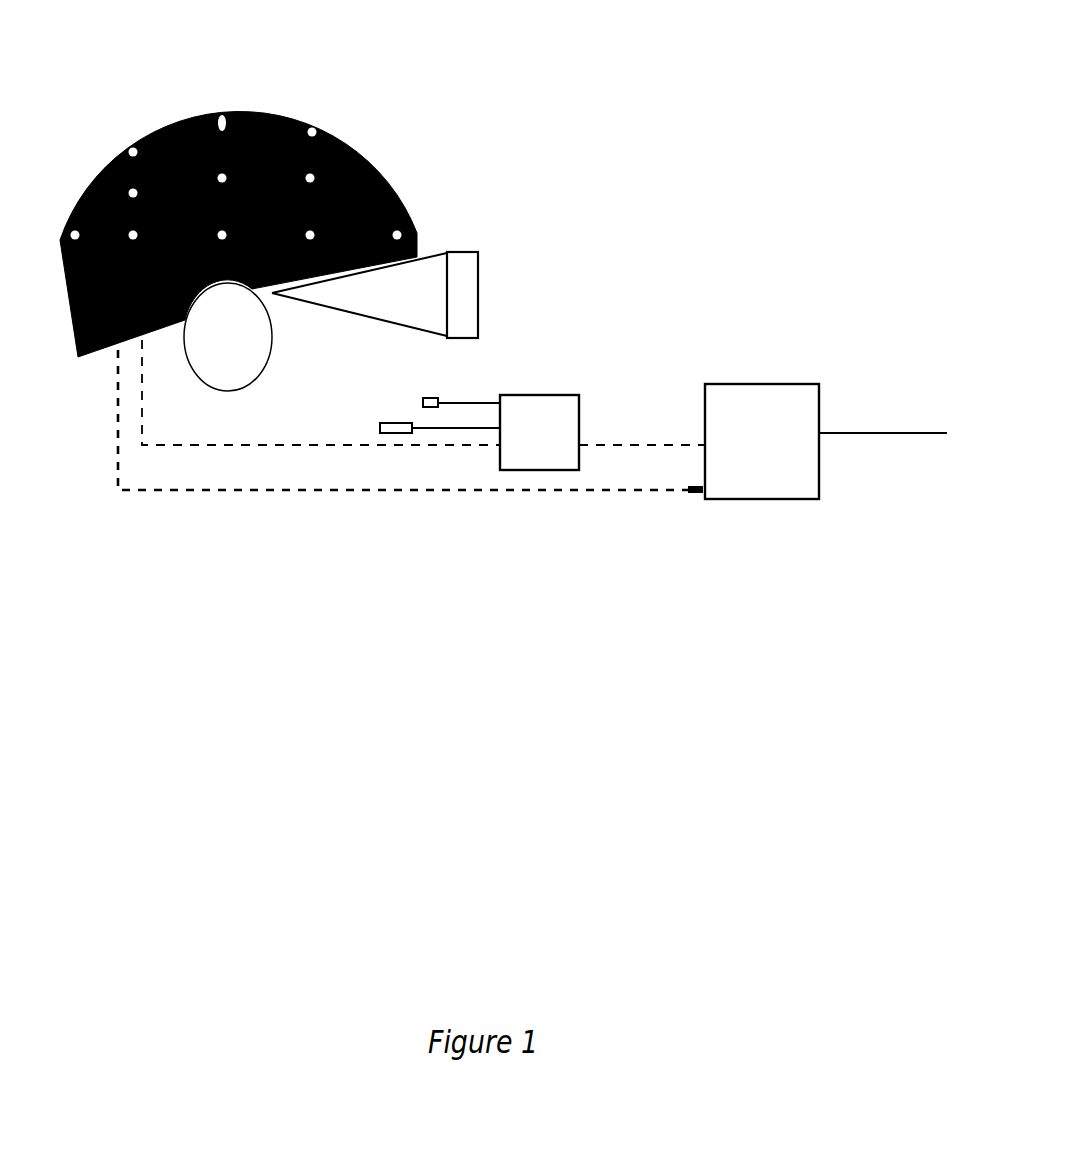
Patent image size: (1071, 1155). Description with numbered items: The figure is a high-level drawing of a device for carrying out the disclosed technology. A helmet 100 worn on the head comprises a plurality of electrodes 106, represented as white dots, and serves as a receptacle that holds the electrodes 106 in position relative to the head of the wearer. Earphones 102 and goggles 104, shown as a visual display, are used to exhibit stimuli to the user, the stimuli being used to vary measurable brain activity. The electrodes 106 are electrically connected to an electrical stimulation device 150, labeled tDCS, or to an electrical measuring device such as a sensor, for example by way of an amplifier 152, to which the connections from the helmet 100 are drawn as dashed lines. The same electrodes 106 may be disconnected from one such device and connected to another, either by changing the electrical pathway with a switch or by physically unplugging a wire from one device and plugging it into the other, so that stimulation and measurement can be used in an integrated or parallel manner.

The helmet 100 is at (287, 110).
The earphones 102 is at (228, 393).
The goggles 104 is at (465, 272).
The electrodes 106 is at (134, 145).
The electrical stimulation device 150 is at (543, 468).
The amplifier 152 is at (757, 489).